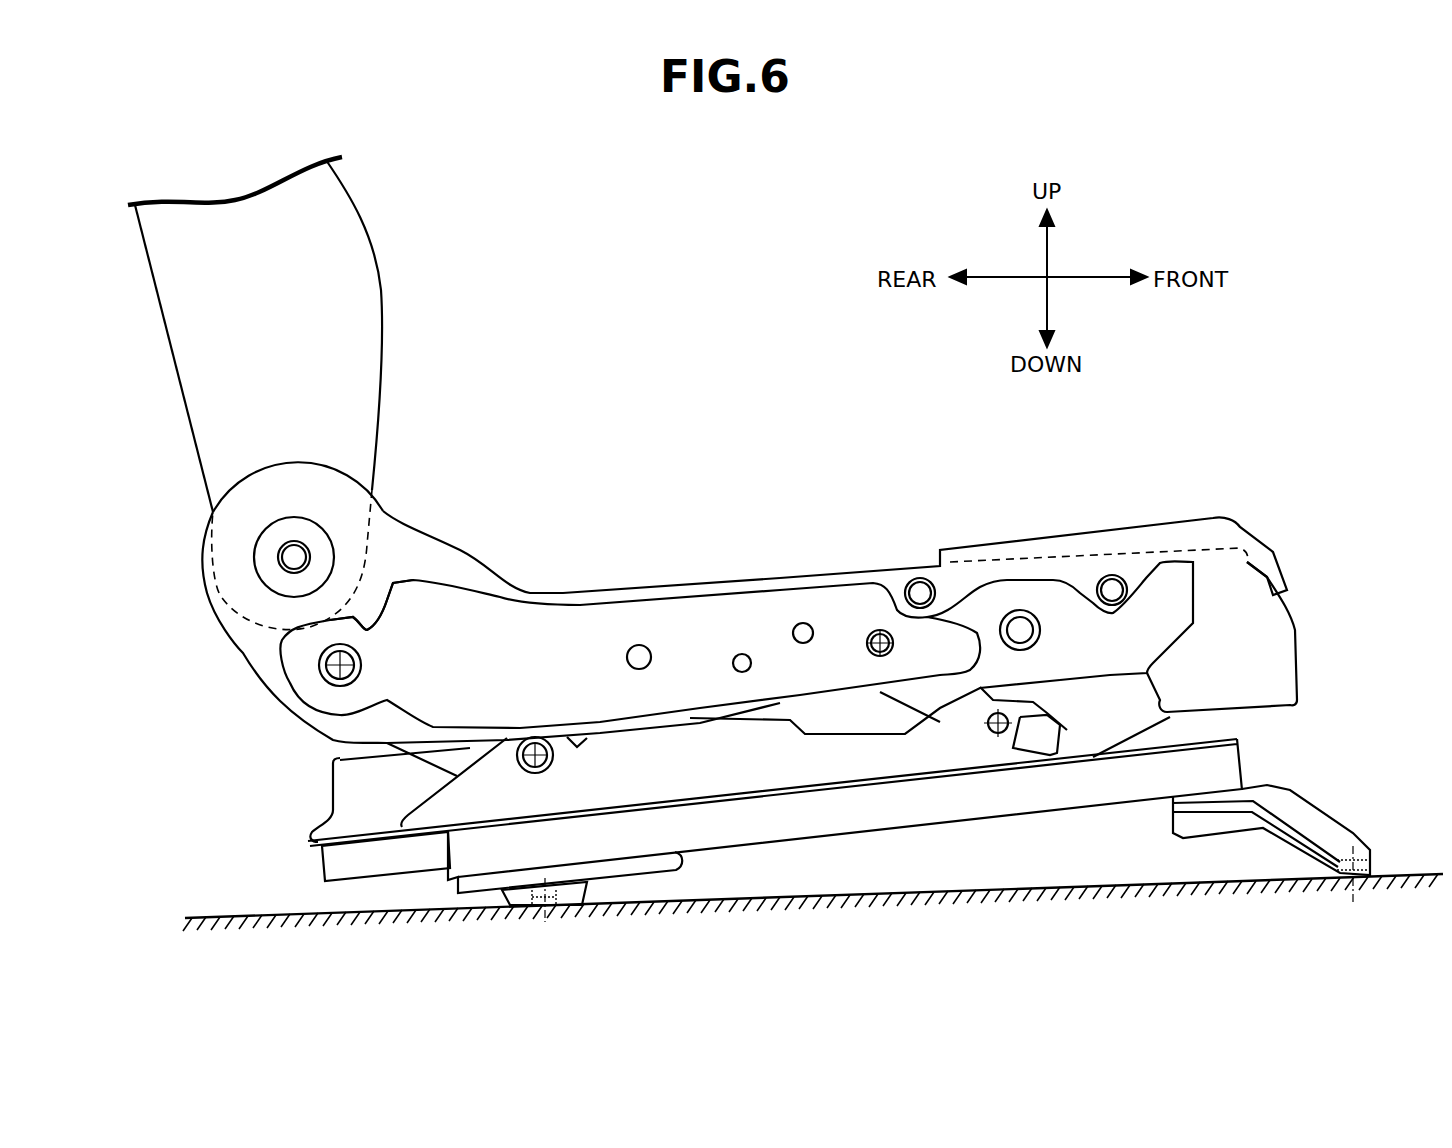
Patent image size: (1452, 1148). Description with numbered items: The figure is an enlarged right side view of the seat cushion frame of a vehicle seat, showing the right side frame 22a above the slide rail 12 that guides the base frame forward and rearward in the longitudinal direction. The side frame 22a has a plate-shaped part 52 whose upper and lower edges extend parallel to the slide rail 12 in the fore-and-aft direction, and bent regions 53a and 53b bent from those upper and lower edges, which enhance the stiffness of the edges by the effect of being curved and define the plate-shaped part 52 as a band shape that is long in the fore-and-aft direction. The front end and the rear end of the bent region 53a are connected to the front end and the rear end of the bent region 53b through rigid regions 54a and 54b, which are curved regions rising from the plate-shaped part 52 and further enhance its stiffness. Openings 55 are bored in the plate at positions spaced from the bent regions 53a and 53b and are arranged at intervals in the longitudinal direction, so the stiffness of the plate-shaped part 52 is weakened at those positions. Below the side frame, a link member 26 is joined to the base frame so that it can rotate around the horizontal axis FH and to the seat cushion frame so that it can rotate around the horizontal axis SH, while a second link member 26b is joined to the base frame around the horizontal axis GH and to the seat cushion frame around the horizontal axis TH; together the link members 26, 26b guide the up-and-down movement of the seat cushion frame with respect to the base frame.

The slide rail 12 is at (1240, 765).
The side frame 22a is at (407, 523).
The link member 26 is at (437, 757).
The link member 26b is at (930, 700).
The plate-shaped part 52 is at (712, 610).
The bent region 53a is at (785, 580).
The bent region 53b is at (740, 710).
The rigid region 54a is at (977, 620).
The rigid region 54b is at (397, 588).
The opening 55 is at (630, 655).
The horizontal axis SH is at (330, 678).
The horizontal axis FH is at (545, 765).
The horizontal axis TH is at (877, 657).
The horizontal axis GH is at (996, 735).